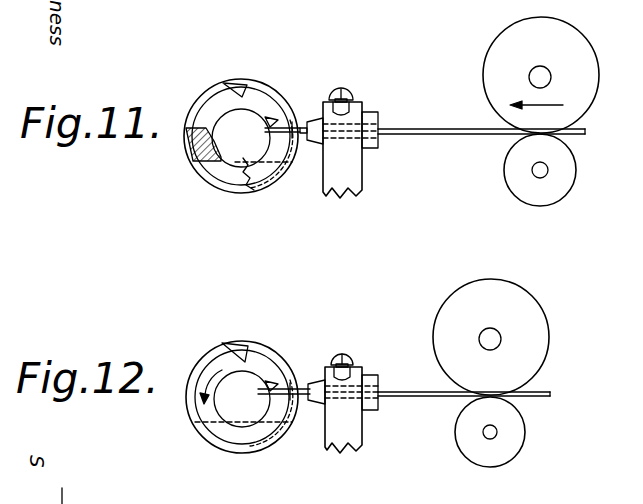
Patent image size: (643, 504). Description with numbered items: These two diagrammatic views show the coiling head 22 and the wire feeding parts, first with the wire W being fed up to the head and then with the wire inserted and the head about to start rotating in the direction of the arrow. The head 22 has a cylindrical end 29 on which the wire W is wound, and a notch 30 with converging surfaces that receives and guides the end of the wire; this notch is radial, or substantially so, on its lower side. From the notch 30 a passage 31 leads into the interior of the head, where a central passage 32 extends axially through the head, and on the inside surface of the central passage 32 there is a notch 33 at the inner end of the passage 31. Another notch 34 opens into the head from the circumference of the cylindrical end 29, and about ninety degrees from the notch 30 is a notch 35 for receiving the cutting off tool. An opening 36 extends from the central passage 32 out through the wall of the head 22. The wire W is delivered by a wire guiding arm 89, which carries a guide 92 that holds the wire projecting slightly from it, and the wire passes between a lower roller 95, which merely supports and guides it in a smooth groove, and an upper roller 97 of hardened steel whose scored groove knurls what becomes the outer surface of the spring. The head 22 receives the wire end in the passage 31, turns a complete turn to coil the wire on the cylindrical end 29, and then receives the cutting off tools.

In FIG. 11, the head 22 is at (199, 179).
In FIG. 12, the head 22 is at (199, 431).
In FIG. 11, the cylindrical end 29 is at (216, 92).
In FIG. 12, the cylindrical end 29 is at (233, 447).
In FIG. 11, the notch 30 is at (278, 119).
In FIG. 12, the notch 30 is at (283, 388).
In FIG. 11, the passage 31 is at (250, 160).
In FIG. 12, the passage 31 is at (242, 399).
In FIG. 11, the central passage 32 is at (255, 190).
In FIG. 12, the central passage 32 is at (247, 415).
In FIG. 11, the notch 33 is at (264, 120).
In FIG. 12, the notch 33 is at (264, 384).
In FIG. 11, the notch 34 is at (284, 152).
In FIG. 12, the notch 34 is at (285, 420).
In FIG. 11, the notch 35 is at (239, 83).
In FIG. 12, the notch 35 is at (240, 346).
In FIG. 11, the opening 36 is at (212, 166).
In FIG. 11, the wire guiding arm 89 is at (350, 181).
In FIG. 12, the wire guiding arm 89 is at (352, 433).
In FIG. 11, the guide 92 is at (372, 117).
In FIG. 12, the guide 92 is at (366, 377).
In FIG. 11, the roller 95 is at (574, 178).
In FIG. 12, the roller 95 is at (514, 445).
In FIG. 11, the second roller 97 is at (497, 41).
In FIG. 12, the second roller 97 is at (461, 289).
In FIG. 11, the wire W is at (481, 142).
In FIG. 12, the wire W is at (464, 382).